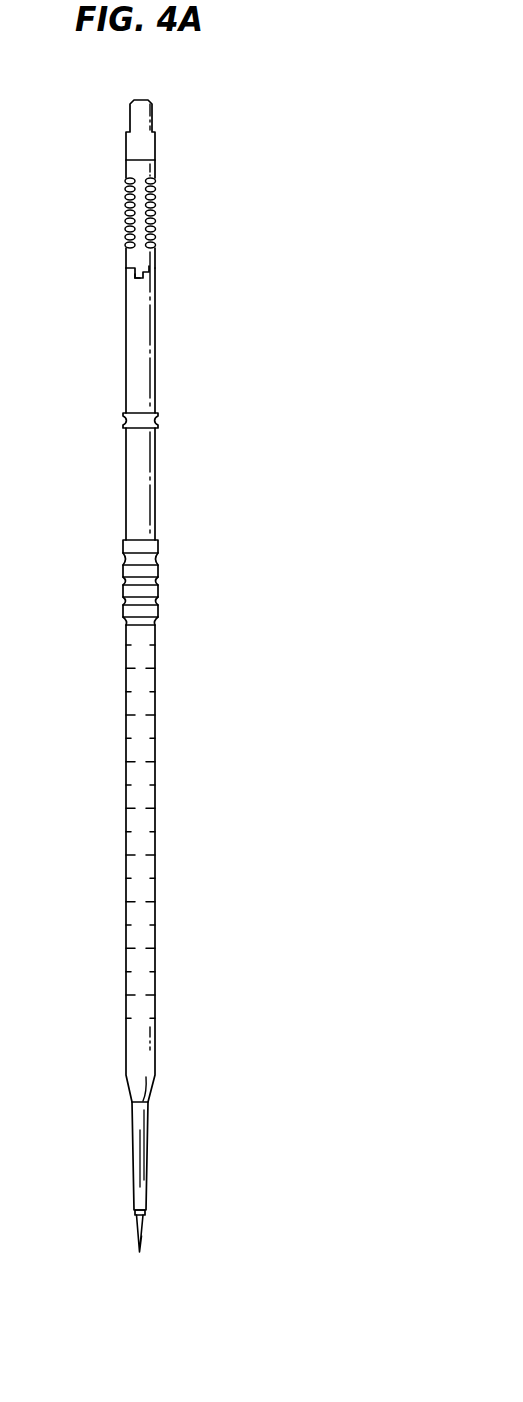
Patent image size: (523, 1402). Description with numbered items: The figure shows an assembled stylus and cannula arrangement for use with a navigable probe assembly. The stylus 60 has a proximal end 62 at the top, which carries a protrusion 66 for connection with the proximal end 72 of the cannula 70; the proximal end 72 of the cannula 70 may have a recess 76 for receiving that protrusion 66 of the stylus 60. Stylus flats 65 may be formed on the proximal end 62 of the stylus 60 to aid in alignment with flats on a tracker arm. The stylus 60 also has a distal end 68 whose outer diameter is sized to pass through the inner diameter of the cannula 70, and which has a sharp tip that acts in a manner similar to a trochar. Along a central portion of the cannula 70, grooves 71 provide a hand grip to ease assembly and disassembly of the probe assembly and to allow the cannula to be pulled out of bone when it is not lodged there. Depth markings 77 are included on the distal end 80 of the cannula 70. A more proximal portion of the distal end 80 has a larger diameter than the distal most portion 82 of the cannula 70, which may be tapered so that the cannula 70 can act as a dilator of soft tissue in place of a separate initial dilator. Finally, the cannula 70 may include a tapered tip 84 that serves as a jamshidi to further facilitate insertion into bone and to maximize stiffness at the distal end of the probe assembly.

The stylus 60 is at (178, 178).
The proximal end 62 is at (60, 100).
The stylus flats 65 is at (142, 222).
The protrusion 66 is at (149, 270).
The recess 76 is at (135, 280).
The proximal end 72 is at (257, 265).
The grooves 71 is at (127, 580).
The cannula 70 is at (185, 669).
The depth markings 77 is at (126, 810).
The distal end 80 is at (257, 627).
The distal most portion 82 is at (138, 1140).
The tapered tip 84 is at (137, 1214).
The distal end 68 is at (142, 1240).